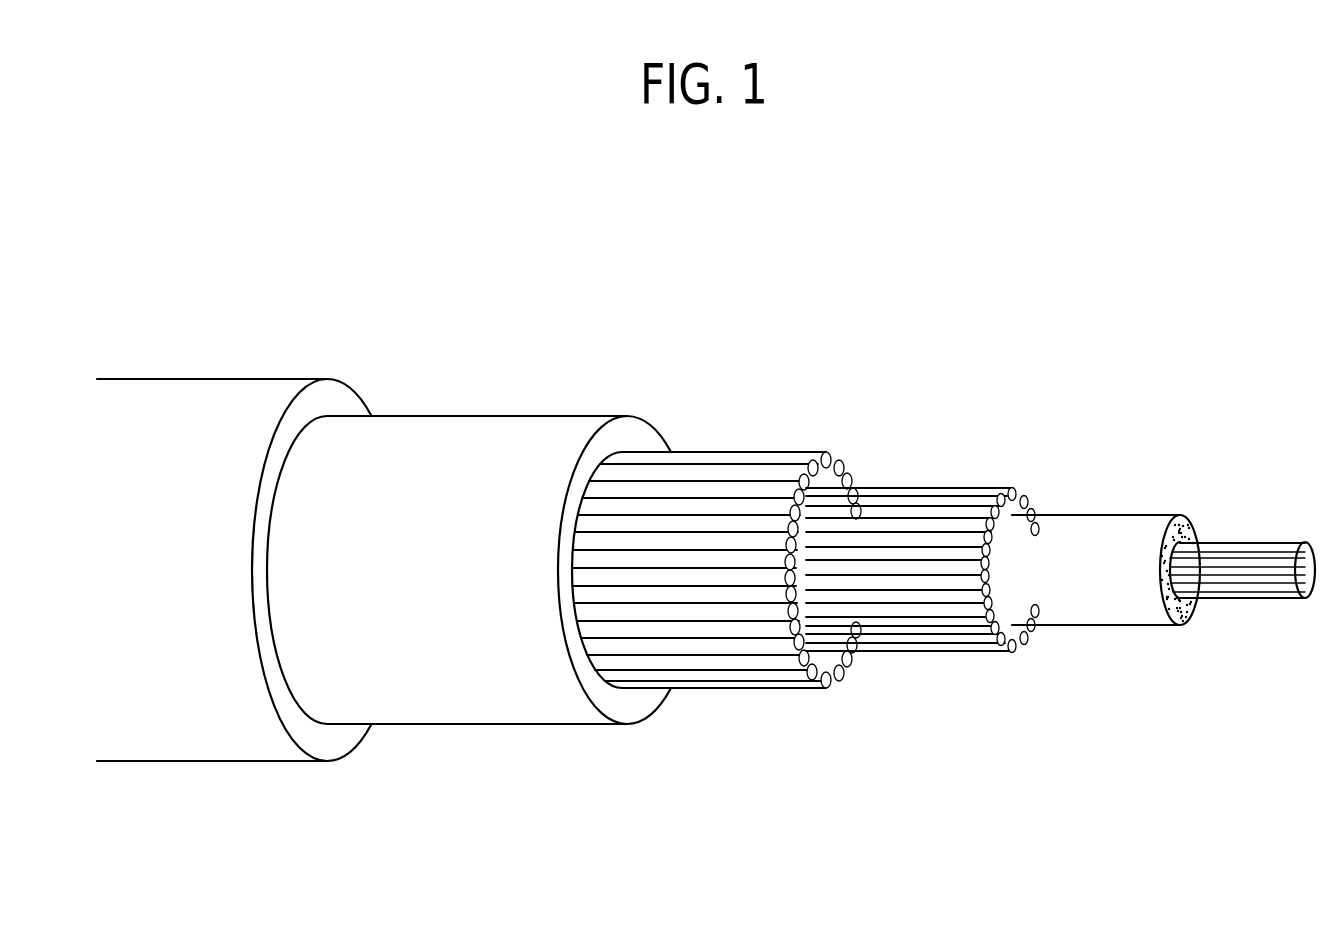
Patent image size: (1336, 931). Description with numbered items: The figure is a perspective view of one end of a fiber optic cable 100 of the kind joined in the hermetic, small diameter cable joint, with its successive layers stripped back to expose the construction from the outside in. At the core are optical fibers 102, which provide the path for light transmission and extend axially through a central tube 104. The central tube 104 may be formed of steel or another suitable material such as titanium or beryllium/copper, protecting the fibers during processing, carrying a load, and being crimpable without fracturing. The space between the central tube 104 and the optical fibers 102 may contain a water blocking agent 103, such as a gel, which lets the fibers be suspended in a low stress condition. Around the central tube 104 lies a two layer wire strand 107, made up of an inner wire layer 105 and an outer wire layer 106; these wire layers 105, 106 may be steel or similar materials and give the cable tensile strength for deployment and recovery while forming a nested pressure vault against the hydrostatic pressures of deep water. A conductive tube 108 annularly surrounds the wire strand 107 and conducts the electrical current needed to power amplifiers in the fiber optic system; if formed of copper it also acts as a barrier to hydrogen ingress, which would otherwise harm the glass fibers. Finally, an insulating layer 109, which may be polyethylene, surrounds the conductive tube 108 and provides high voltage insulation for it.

The fiber optic cable 100 is at (221, 245).
The optical fibers 102 is at (1270, 565).
The water blocking agent 103 is at (1190, 520).
The central tube 104 is at (1103, 537).
The inner wire layer 105 is at (948, 507).
The outer wire layer 106 is at (690, 468).
The two layer wire strand 107 is at (989, 291).
The conductive tube 108 is at (447, 440).
The insulating layer 109 is at (237, 420).